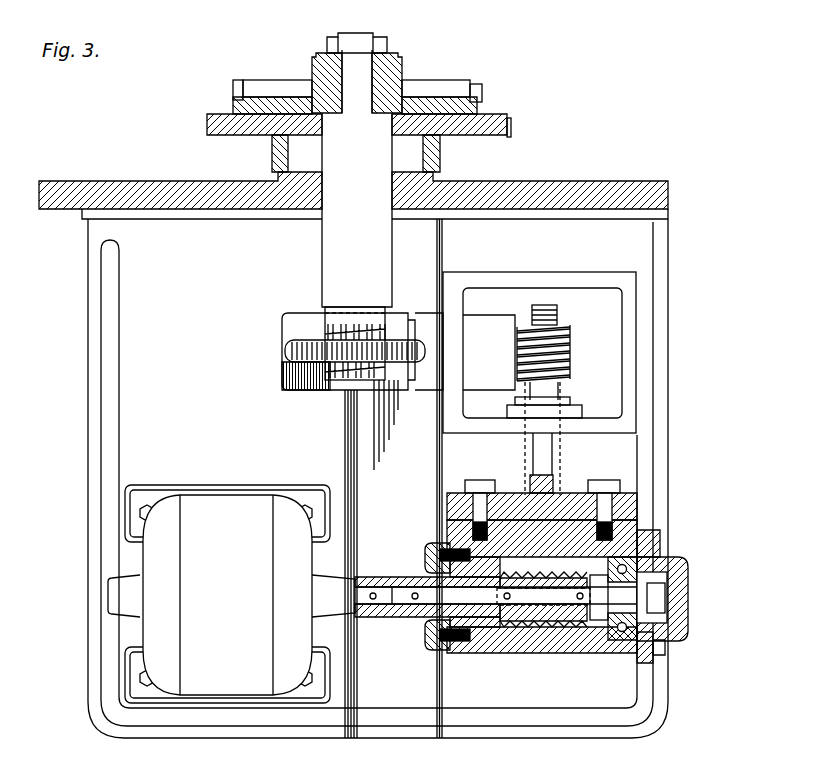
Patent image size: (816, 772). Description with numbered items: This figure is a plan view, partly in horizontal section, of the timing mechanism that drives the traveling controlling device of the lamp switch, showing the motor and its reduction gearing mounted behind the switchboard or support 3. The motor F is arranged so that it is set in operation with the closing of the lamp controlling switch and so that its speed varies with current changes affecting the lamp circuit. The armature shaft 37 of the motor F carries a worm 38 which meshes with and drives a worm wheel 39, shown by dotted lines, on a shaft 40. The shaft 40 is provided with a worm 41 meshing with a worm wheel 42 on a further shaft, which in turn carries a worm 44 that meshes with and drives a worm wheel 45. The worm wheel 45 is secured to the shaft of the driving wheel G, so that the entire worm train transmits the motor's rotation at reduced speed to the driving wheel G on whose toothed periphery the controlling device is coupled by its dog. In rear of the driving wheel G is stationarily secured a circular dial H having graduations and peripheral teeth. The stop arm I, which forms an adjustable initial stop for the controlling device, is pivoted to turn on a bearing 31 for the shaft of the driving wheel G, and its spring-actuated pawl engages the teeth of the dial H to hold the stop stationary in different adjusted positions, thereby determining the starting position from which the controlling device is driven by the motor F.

The switchboard or support 3 is at (142, 182).
The bearing 31 is at (357, 178).
The driving wheel G is at (438, 100).
The circular dial H is at (508, 118).
The stop arm I is at (442, 153).
The worm 44 is at (350, 377).
The worm wheel 45 is at (285, 350).
The worm wheel 42 is at (557, 311).
The worm 41 is at (570, 350).
The shaft 40 is at (525, 455).
The armature shaft 37 is at (386, 600).
The worm 38 is at (546, 622).
The worm wheel 39 is at (496, 602).
The motor F is at (231, 594).